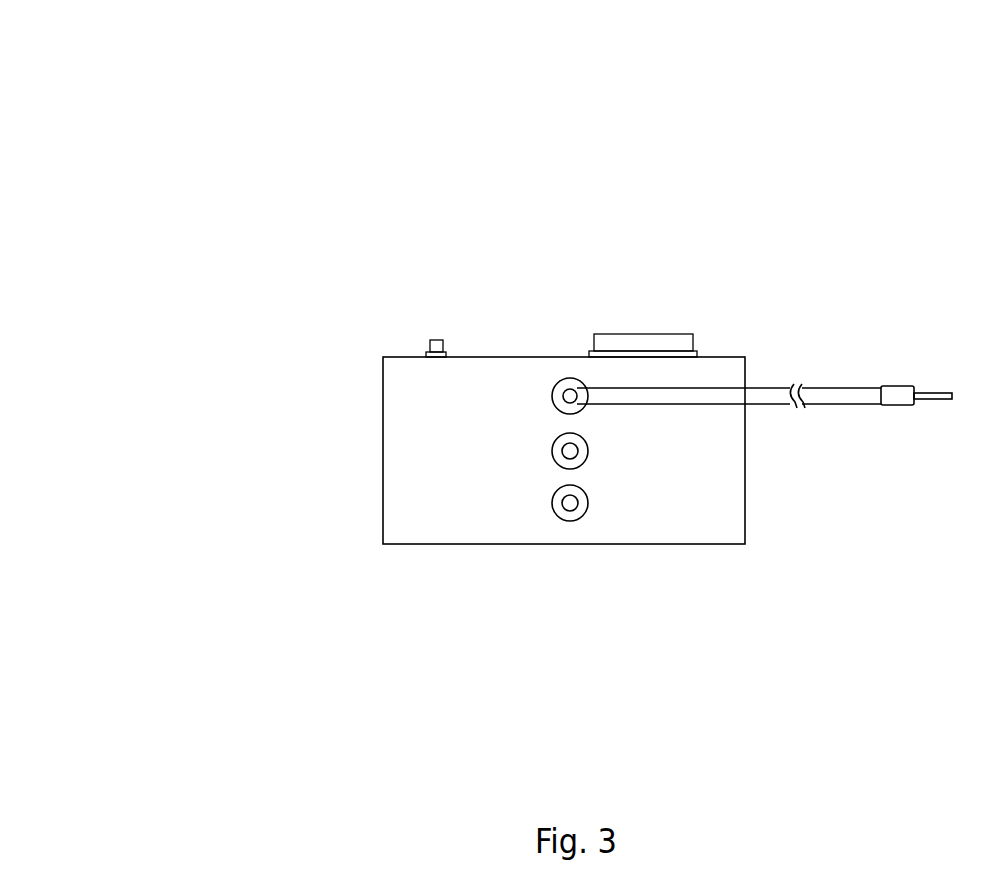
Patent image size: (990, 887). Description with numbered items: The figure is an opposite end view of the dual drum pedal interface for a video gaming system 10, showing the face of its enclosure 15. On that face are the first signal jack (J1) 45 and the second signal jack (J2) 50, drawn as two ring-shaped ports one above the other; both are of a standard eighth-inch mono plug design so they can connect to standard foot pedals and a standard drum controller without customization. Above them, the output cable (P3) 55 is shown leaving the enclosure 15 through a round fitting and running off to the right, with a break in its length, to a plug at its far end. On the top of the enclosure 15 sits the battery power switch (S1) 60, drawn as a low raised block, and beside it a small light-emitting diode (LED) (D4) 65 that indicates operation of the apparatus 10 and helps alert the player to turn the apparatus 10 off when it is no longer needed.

The dual drum pedal interface for a video gaming system 10 is at (84, 114).
The enclosure 15 is at (383, 383).
The first signal jack (J1) 45 is at (557, 459).
The second signal jack (J2) 50 is at (583, 518).
The output cable (P3) 55 is at (829, 387).
The battery power switch (S1) 60 is at (643, 343).
The light-emitting diode (LED) (D4) 65 is at (438, 340).